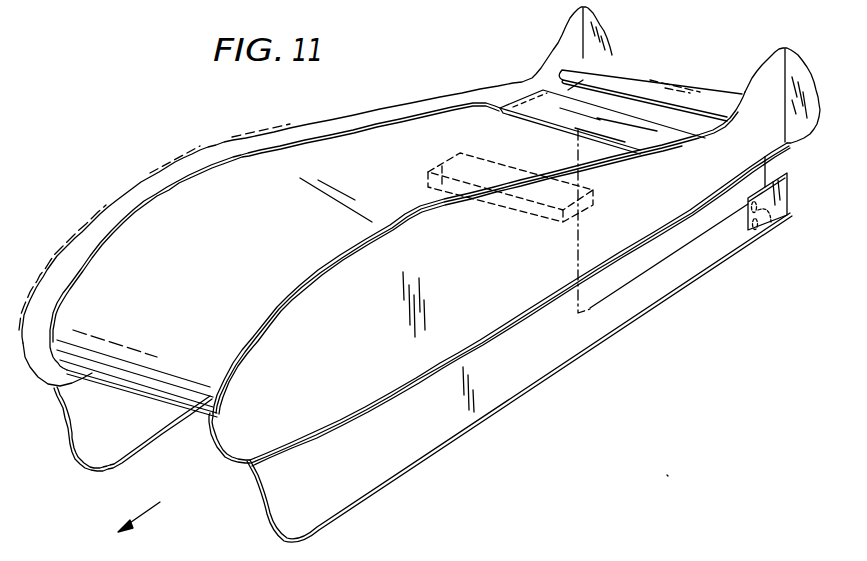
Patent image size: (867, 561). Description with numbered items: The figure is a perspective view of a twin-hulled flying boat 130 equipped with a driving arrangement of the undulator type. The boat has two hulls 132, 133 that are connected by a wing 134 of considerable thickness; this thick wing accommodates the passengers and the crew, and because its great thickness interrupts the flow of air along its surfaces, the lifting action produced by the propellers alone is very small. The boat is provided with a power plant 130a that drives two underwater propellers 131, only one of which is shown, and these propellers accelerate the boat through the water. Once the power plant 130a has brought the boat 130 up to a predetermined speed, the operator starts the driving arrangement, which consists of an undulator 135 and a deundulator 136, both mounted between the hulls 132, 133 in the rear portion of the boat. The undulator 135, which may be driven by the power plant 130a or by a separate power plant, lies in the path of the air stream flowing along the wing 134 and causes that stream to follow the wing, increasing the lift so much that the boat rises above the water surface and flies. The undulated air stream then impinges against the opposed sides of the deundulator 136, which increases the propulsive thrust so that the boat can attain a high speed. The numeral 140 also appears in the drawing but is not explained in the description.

The chassis assembly 130 is at (427, 95).
The hidden component box 130a is at (472, 228).
The mounting tab 131 is at (770, 222).
The left runner rail 132 is at (148, 437).
The right runner rail 133 is at (387, 470).
The deck 134 is at (262, 223).
The raised platform 135 is at (563, 112).
The rear cross plate 136 is at (672, 83).
The component 140 is at (571, 555).